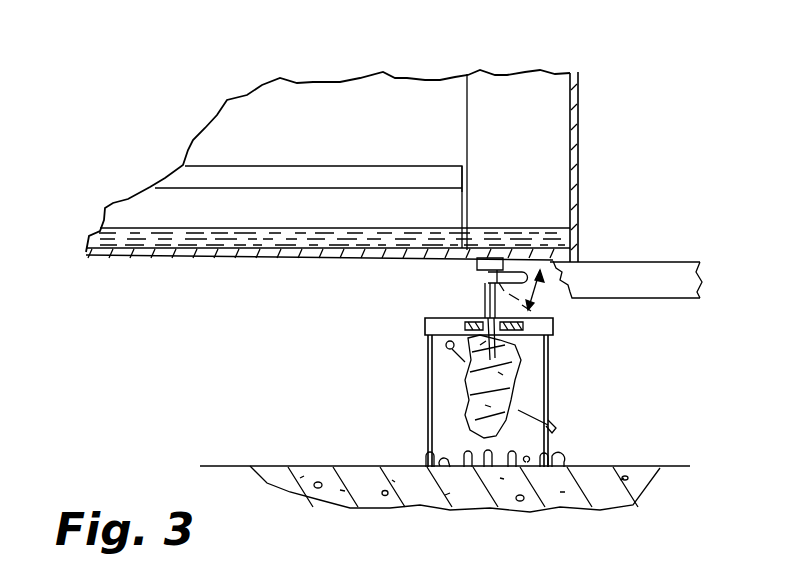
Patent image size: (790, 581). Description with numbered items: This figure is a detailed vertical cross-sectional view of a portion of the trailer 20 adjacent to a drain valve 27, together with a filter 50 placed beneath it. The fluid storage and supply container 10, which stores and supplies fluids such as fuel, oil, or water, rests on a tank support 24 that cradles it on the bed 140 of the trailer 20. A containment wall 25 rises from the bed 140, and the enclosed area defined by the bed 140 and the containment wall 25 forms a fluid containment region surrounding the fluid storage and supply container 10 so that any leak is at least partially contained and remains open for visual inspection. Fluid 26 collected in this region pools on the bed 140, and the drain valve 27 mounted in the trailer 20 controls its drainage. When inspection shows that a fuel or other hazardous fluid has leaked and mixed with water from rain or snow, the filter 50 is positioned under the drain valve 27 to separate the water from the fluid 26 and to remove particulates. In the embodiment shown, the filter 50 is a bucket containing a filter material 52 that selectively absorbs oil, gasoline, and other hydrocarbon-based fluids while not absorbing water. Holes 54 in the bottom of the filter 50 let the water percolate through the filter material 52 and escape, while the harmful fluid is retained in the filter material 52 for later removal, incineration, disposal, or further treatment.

The fluid storage and supply container 10 is at (307, 125).
The trailer 20 is at (155, 258).
The tank support 24 is at (223, 205).
The containment wall 25 is at (578, 142).
The fluid 26 is at (525, 238).
The drain valve 27 is at (483, 282).
The filter 50 is at (555, 377).
The filter material 52 is at (467, 392).
The holes 54 is at (462, 458).
The bed 140 is at (267, 255).